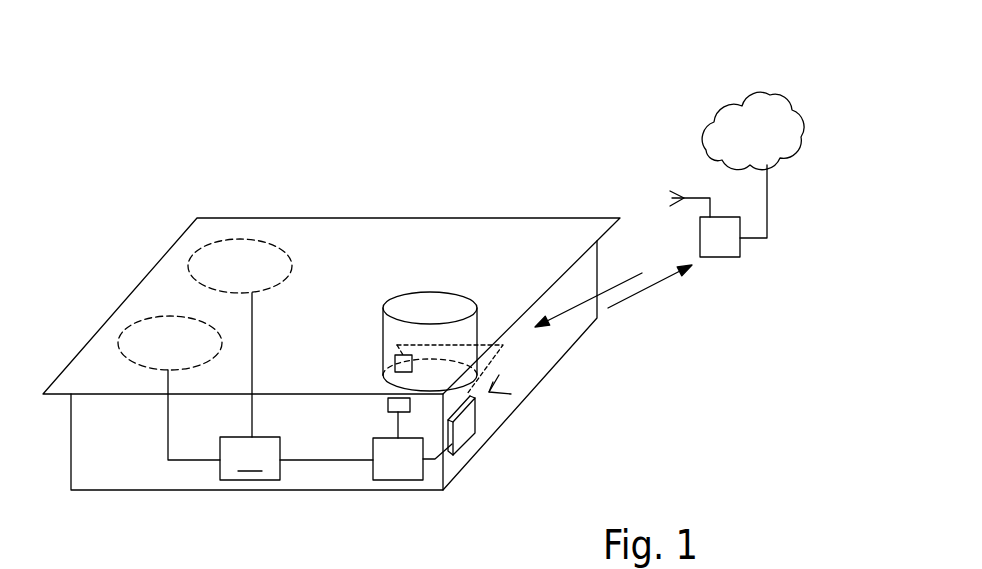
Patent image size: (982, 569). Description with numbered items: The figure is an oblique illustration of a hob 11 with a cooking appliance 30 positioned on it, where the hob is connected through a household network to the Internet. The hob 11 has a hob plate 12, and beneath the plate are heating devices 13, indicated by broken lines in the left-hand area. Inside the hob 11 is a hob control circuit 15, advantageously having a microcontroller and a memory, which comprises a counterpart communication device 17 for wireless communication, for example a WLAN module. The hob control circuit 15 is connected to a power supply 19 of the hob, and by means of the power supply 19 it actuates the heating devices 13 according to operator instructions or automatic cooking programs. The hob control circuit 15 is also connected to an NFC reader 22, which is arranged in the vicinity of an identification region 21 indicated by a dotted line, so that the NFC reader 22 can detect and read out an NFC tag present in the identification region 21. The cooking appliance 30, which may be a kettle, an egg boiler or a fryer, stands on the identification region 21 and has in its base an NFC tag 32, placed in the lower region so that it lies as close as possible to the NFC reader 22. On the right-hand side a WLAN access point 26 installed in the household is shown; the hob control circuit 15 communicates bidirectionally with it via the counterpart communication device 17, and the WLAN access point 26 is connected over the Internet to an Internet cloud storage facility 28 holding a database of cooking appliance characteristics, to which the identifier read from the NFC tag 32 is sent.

The hob 11 is at (334, 276).
The hob plate 12 is at (330, 233).
The heating devices 13 is at (210, 258).
The hob control circuit 15 is at (383, 473).
The counterpart communication device 17 is at (462, 432).
The power supply 19 is at (270, 386).
The identification region 21 is at (390, 371).
The NFC reader 22 is at (390, 404).
The WLAN access point 26 is at (722, 245).
The Internet cloud storage facility 28 is at (733, 118).
The cooking appliance 30 is at (434, 307).
The NFC tag 32 is at (407, 308).